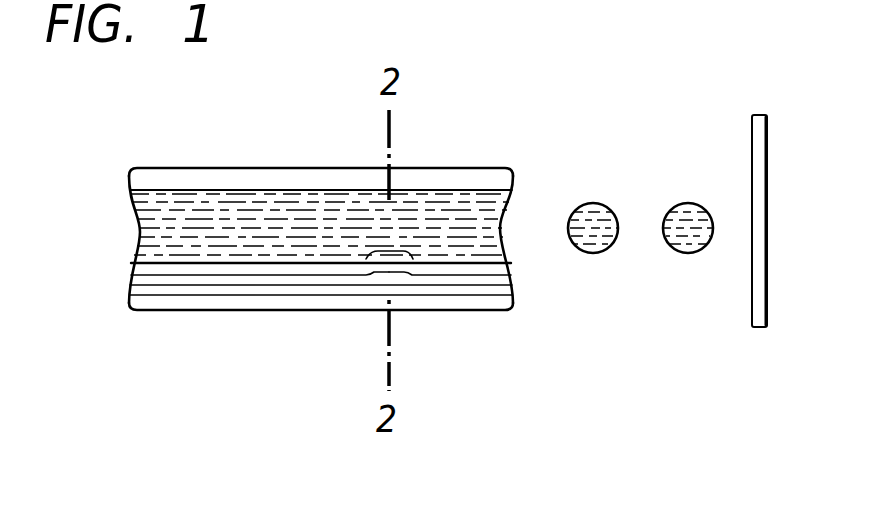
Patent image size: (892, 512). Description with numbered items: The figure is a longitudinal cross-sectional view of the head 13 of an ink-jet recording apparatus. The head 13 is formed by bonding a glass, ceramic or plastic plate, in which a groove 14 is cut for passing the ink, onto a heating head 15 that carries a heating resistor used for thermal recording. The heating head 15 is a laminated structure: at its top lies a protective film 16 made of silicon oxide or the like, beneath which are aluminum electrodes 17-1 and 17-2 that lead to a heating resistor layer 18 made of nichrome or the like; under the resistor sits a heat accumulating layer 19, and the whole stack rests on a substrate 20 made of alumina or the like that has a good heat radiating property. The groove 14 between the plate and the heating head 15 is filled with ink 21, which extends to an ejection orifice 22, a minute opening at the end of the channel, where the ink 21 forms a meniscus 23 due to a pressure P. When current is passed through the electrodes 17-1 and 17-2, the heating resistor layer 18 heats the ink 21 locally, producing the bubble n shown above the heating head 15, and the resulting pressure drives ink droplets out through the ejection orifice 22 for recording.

The head 13 is at (207, 168).
The groove 14 is at (258, 192).
The ink 21 is at (168, 203).
The bubble n is at (389, 250).
The heating head 15 is at (116, 260).
The protective film 16 is at (160, 268).
The aluminum electrode 17-1 is at (210, 277).
The aluminum electrode 17-2 is at (473, 275).
The heating resistor layer 18 is at (252, 283).
The heat accumulating layer 19 is at (300, 293).
The substrate 20 is at (362, 302).
The ejection orifice 22 is at (520, 250).
The meniscus 23 is at (508, 212).